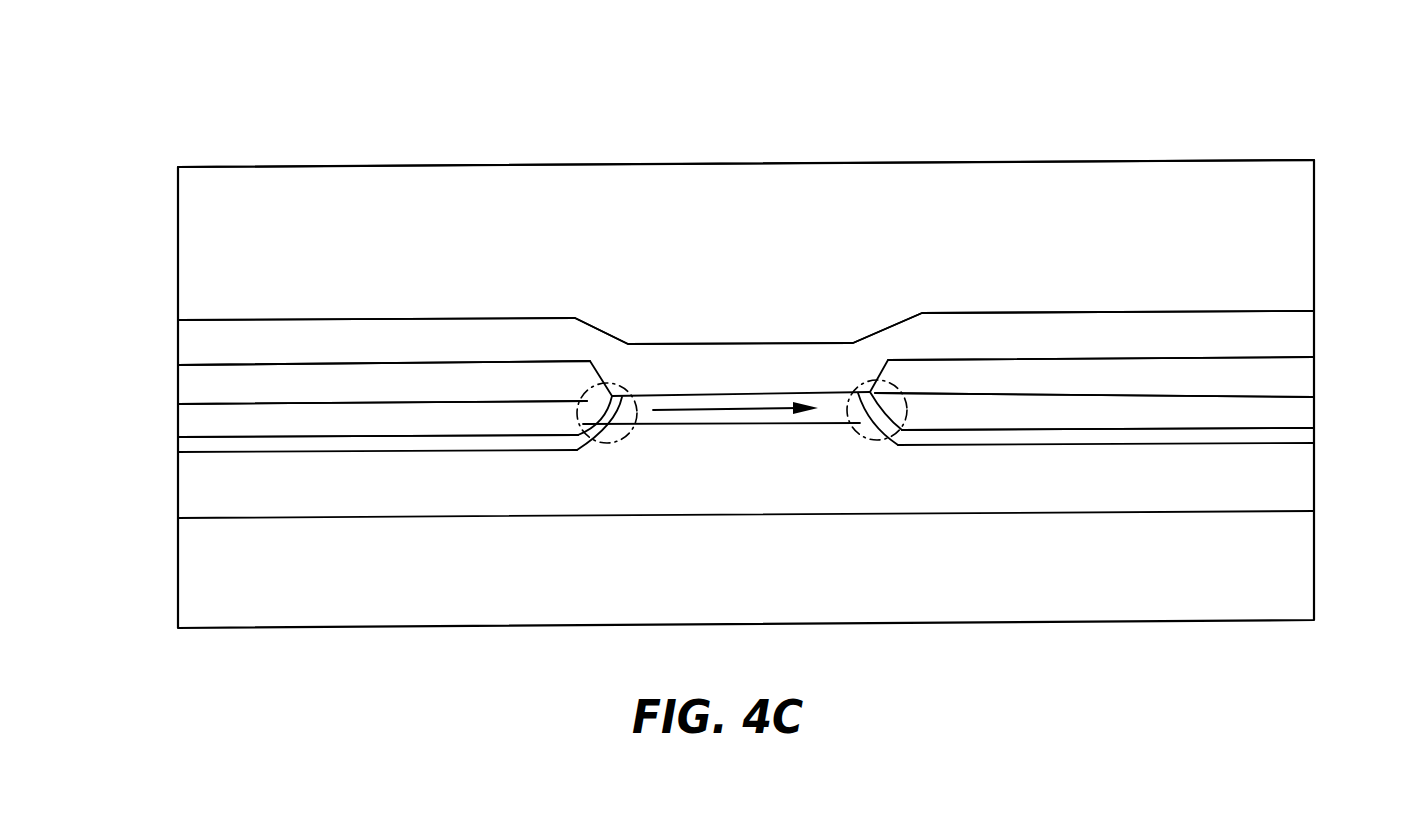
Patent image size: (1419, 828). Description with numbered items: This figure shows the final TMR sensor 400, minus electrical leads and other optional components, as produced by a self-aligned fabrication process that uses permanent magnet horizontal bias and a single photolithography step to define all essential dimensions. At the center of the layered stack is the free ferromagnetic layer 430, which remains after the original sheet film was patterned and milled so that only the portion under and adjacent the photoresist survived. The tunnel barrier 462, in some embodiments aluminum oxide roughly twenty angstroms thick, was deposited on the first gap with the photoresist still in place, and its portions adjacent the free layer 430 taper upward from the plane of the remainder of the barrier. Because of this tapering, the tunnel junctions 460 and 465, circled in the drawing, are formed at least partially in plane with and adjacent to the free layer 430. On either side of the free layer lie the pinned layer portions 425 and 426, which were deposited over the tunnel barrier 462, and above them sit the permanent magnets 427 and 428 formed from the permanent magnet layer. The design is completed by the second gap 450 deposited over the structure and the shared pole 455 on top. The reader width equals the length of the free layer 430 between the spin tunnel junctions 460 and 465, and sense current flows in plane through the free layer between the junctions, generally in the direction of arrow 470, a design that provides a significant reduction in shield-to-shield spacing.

The TMR sensor 400 is at (985, 125).
The shared pole 455 is at (1298, 255).
The second gap 450 is at (1297, 335).
The permanent magnet 428 is at (1303, 378).
The permanent magnet 427 is at (207, 389).
The pinned layer portion 426 is at (1296, 418).
The pinned layer portion 425 is at (197, 420).
The tunnel barrier 462 is at (195, 442).
The free ferromagnetic layer 430 is at (662, 426).
The tunnel junction 460 is at (603, 448).
The tunnel junction 465 is at (866, 442).
The arrow 470 is at (740, 408).